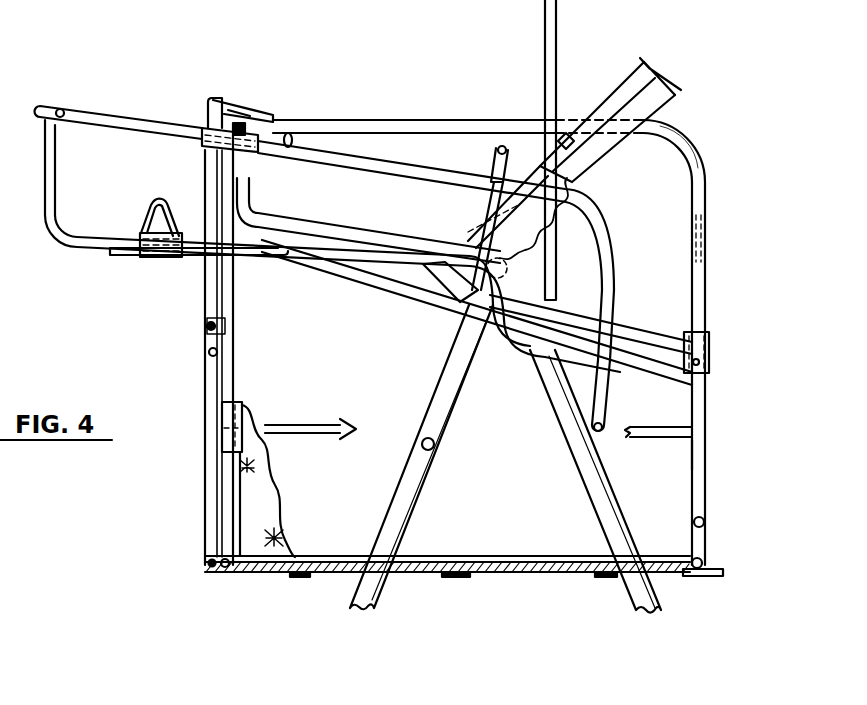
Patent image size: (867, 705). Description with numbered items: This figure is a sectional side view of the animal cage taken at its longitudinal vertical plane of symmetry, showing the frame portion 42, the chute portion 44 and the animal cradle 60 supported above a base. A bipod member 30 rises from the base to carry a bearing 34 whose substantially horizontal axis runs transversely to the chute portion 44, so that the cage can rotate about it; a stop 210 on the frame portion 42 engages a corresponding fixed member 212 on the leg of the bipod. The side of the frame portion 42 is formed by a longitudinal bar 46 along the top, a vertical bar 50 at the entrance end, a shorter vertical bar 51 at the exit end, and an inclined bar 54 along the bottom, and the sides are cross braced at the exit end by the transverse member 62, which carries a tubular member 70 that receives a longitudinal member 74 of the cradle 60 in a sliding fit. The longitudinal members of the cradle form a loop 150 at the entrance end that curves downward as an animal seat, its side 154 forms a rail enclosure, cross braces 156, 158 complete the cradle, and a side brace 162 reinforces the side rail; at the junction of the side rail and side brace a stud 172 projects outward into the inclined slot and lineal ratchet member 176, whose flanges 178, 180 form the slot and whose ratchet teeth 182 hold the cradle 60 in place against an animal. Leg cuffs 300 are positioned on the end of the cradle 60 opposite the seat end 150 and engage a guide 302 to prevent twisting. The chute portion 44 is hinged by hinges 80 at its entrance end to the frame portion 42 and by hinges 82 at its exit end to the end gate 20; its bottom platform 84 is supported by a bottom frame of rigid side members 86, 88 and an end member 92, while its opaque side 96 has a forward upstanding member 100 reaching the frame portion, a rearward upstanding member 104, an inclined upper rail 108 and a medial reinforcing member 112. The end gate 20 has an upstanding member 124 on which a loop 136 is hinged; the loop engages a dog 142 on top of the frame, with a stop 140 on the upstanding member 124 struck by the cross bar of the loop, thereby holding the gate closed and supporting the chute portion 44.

The end gate 20 is at (203, 297).
The bipod member 30 is at (452, 398).
The bearing 34 is at (508, 268).
The frame portion 42 is at (705, 145).
The chute portion 44 is at (246, 488).
The longitudinal bar 46 is at (419, 119).
The vertical bar 50 is at (707, 186).
The vertical bar 51 is at (244, 180).
The inclined bar 54 is at (649, 330).
The cradle 60 is at (380, 172).
The transverse member 62 is at (244, 138).
The tubular member 70 is at (203, 146).
The longitudinal member 74 is at (100, 112).
The hinge 80 is at (711, 345).
The hinge 82 is at (207, 565).
The platform 84 is at (515, 572).
The rigid side member 86 is at (243, 555).
The rigid side member 88 is at (702, 560).
The end member 92 is at (330, 555).
The side 96 is at (279, 498).
The forward upstanding member 100 is at (236, 386).
The rearward upstanding member 104 is at (707, 456).
The inclined longitudinal upper rail 108 is at (378, 270).
The longitudinal medial reinforcing member 112 is at (303, 425).
The upstanding member 124 is at (208, 314).
The loop 136 is at (220, 97).
The stop 140 is at (212, 108).
The dog 142 is at (276, 114).
The loop 150 is at (605, 425).
The side 154 is at (312, 264).
The cross brace 156 is at (291, 130).
The cross brace 158 is at (499, 144).
The side brace 162 is at (489, 200).
The stud 172 is at (470, 257).
The slot and lineal ratchet member 176 is at (608, 151).
The flange 178 is at (650, 67).
The flange 180 is at (570, 136).
The ratchet teeth 182 is at (543, 223).
The stop 210 is at (705, 245).
The fixed member 212 is at (435, 447).
The leg cuff 300 is at (174, 229).
The guide 302 is at (189, 262).